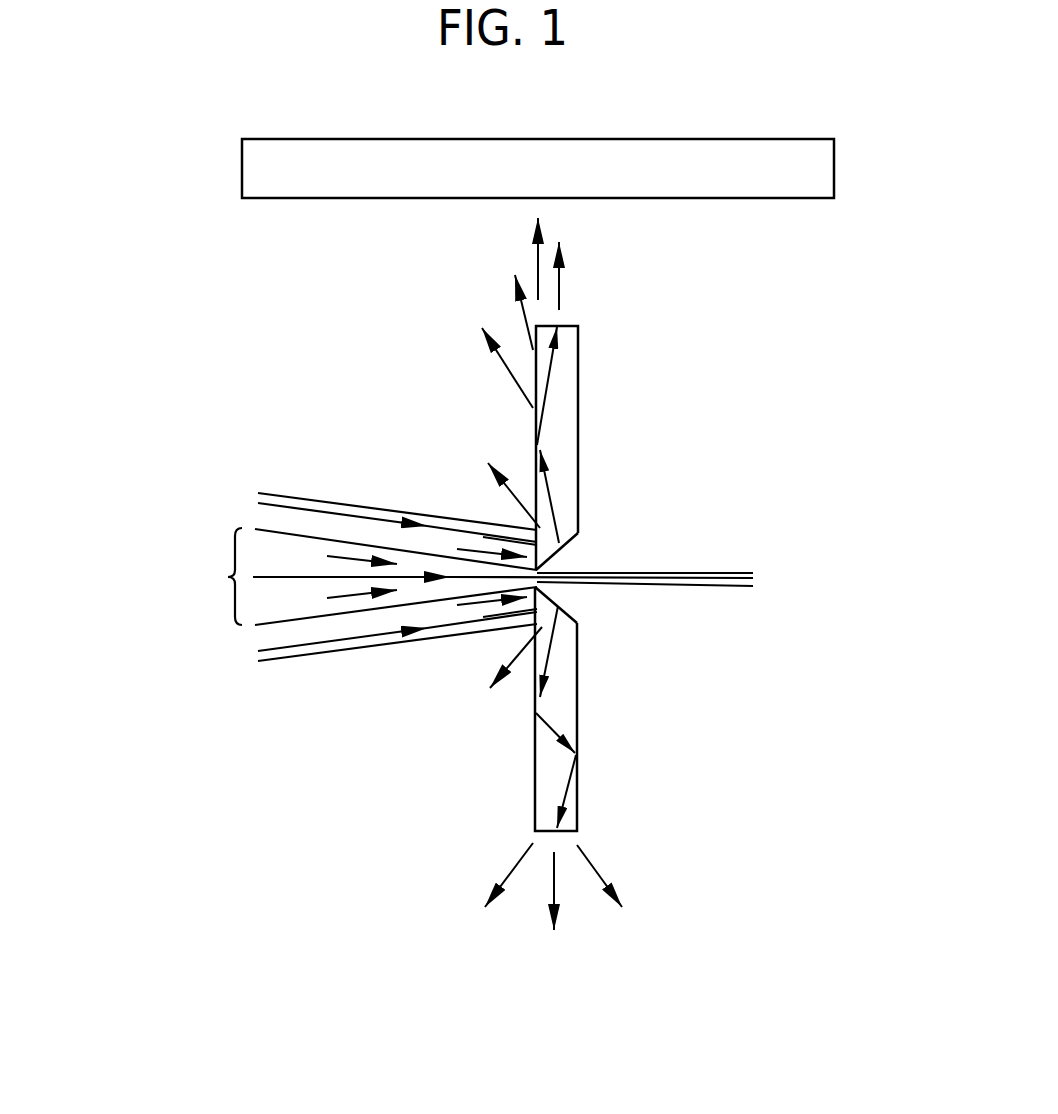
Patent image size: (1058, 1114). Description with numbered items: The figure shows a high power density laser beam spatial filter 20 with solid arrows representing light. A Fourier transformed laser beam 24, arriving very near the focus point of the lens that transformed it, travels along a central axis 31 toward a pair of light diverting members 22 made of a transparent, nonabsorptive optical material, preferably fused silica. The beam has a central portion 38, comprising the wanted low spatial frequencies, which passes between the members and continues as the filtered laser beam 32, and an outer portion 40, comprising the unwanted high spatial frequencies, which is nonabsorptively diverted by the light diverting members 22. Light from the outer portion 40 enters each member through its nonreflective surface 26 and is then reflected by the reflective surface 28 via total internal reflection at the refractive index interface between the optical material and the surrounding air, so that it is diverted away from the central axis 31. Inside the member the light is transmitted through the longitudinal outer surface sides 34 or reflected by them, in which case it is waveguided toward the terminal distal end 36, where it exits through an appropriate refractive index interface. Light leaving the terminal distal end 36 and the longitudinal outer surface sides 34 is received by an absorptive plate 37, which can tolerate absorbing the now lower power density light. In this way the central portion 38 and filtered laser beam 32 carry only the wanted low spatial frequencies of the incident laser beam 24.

The high power density laser beam spatial filter 20 is at (738, 733).
The light diverting member 22 is at (578, 380).
The Fourier transformed laser beam 24 is at (330, 687).
The nonreflective surface 26 is at (560, 550).
The reflective surface 28 is at (557, 553).
The central axis 31 is at (285, 572).
The filtered laser beam 32 is at (733, 597).
The longitudinal outer surface sides 34 is at (522, 428).
The terminal distal end 36 is at (556, 330).
The plate 37 is at (527, 185).
The central portion 38 is at (469, 576).
The outer portion 40 is at (240, 504).